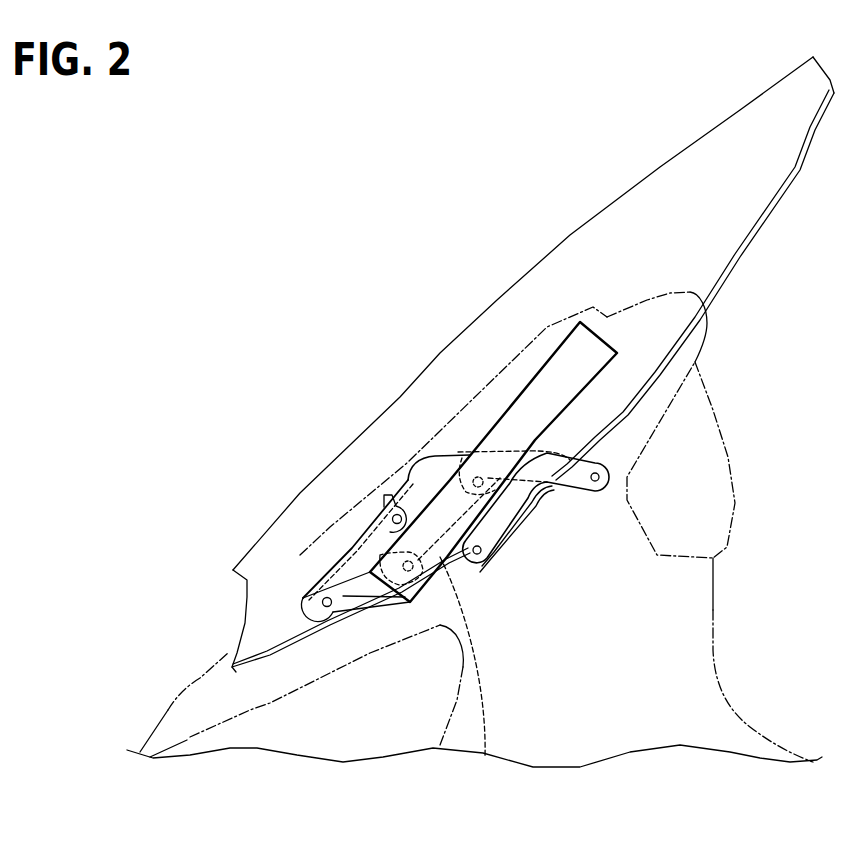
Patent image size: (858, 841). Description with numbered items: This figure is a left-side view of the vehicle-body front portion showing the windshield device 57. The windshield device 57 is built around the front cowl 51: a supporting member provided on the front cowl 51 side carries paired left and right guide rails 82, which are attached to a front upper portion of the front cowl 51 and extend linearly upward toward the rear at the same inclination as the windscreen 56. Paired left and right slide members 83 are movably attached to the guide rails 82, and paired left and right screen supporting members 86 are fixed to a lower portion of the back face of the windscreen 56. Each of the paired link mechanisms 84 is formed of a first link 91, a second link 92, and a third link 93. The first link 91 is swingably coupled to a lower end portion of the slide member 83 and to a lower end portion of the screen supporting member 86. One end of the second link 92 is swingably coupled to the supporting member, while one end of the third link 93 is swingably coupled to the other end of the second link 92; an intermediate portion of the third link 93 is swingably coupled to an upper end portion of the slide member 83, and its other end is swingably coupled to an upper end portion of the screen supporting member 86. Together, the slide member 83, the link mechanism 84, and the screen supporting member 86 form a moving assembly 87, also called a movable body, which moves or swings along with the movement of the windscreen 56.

The front cowl 51 is at (167, 715).
The windscreen 56 is at (667, 183).
The windshield device 57 is at (558, 240).
The guide rail 82 is at (540, 383).
The slide member 83 is at (470, 674).
The link mechanism 84 is at (435, 455).
The screen supporting member 86 is at (352, 558).
The moving assembly 87 is at (358, 502).
The first link 91 is at (333, 592).
The second link 92 is at (493, 533).
The third link 93 is at (417, 483).